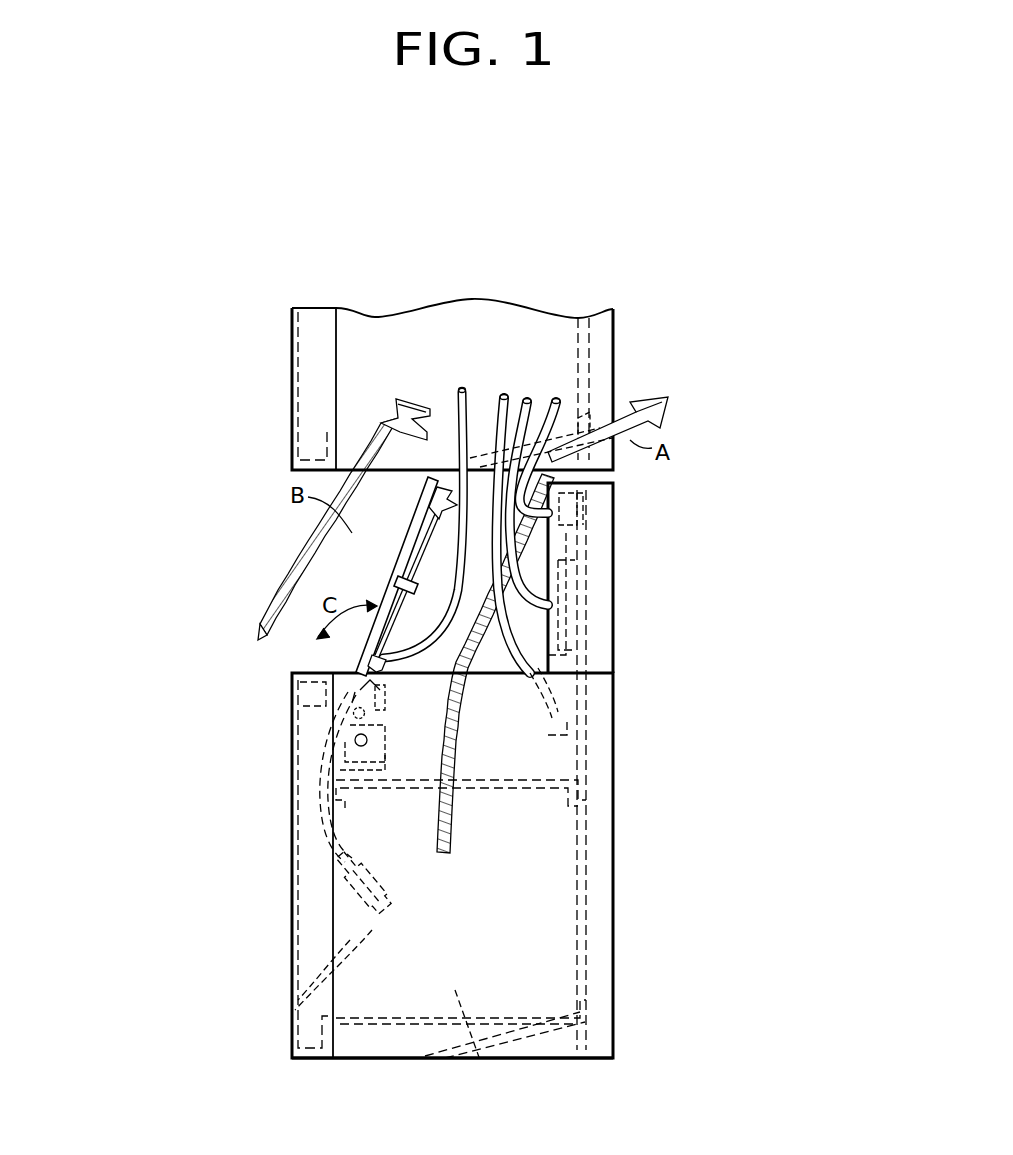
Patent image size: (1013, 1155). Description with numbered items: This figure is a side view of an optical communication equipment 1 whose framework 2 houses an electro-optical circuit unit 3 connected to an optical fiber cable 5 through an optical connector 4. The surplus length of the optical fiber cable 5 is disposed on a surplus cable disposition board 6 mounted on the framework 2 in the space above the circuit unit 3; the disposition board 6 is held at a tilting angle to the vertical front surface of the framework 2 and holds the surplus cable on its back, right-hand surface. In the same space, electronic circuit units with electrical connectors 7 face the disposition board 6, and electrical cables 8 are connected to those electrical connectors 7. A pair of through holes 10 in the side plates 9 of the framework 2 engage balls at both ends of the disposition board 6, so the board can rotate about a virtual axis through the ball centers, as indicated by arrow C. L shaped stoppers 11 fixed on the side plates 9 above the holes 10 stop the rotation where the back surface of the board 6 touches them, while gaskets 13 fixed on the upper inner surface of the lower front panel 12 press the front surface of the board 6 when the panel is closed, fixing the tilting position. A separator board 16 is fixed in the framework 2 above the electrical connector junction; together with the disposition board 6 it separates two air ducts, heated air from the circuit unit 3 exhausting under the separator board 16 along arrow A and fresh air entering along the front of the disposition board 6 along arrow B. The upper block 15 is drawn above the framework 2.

The optical communication equipment 1 is at (262, 250).
The framework 2 is at (614, 714).
The electro-optical circuit unit 3 is at (462, 1000).
The optical connector 4 is at (290, 1006).
The optical fiber cable 5 is at (463, 386).
The surplus cable disposition board 6 is at (380, 592).
The electrical connector 7 is at (562, 512).
The electrical cable 8 is at (534, 393).
The side plate 9 is at (388, 975).
The through hole 10 is at (356, 744).
The stopper 11 is at (348, 680).
The lower front panel 12 is at (308, 924).
The gasket 13 is at (350, 713).
The upper block 15 is at (399, 336).
The separator board 16 is at (600, 410).